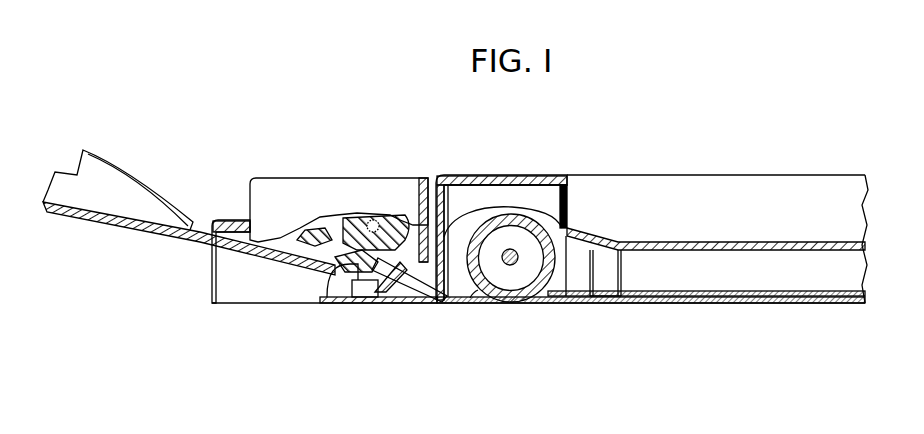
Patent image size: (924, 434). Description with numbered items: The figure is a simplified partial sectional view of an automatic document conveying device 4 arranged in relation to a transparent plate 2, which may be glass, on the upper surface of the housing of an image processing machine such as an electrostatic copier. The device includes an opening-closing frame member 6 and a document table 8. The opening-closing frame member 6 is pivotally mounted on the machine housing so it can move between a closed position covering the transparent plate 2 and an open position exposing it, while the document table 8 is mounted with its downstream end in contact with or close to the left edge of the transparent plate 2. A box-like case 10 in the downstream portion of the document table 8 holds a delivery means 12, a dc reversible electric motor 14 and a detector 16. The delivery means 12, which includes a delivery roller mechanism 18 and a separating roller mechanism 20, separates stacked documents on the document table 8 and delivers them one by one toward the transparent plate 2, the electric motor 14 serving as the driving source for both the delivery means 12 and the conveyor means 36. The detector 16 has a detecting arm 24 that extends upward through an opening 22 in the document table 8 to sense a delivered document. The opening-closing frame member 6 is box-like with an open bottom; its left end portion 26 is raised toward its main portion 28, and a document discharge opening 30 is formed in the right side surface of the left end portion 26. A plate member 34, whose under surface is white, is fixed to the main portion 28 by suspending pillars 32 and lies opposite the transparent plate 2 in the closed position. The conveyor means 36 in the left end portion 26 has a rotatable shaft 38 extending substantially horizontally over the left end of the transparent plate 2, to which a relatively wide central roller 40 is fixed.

The transparent plate 2 is at (736, 305).
The automatic document conveying device 4 is at (481, 134).
The opening-closing frame member 6 is at (695, 166).
The document table 8 is at (150, 238).
The case 10 is at (336, 176).
The delivery means 12 is at (270, 262).
The dc reversible electric motor 14 is at (343, 300).
The detector 16 is at (373, 298).
The delivery roller mechanism 18 is at (289, 242).
The separating roller mechanism 20 is at (410, 222).
The opening 22 is at (413, 293).
The detecting arm 24 is at (400, 282).
The left end portion 26 is at (513, 174).
The main portion 28 is at (767, 215).
The document discharge opening 30 is at (567, 202).
The suspending pillars 32 is at (622, 276).
The plate member 34 is at (740, 294).
The conveyor means 36 is at (537, 222).
The rotatable shaft 38 is at (515, 266).
The central roller 40 is at (472, 296).